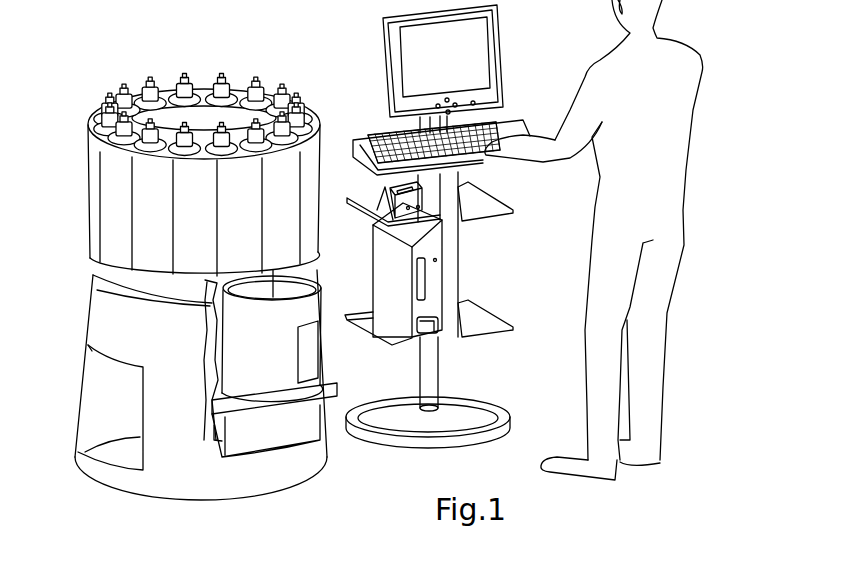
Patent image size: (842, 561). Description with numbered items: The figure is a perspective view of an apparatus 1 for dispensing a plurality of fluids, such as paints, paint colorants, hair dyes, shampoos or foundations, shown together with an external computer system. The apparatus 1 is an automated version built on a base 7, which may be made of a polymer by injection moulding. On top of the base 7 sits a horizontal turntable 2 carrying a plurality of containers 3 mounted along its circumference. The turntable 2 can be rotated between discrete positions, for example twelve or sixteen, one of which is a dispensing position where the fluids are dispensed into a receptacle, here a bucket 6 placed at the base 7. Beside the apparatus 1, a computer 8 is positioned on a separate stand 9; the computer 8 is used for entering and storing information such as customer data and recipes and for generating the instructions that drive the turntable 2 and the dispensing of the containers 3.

The apparatus 1 is at (96, 73).
The turntable 2 is at (176, 178).
The containers 3 is at (105, 120).
The bucket 6 is at (232, 357).
The base 7 is at (98, 318).
The computer 8 is at (425, 275).
The stand 9 is at (425, 366).